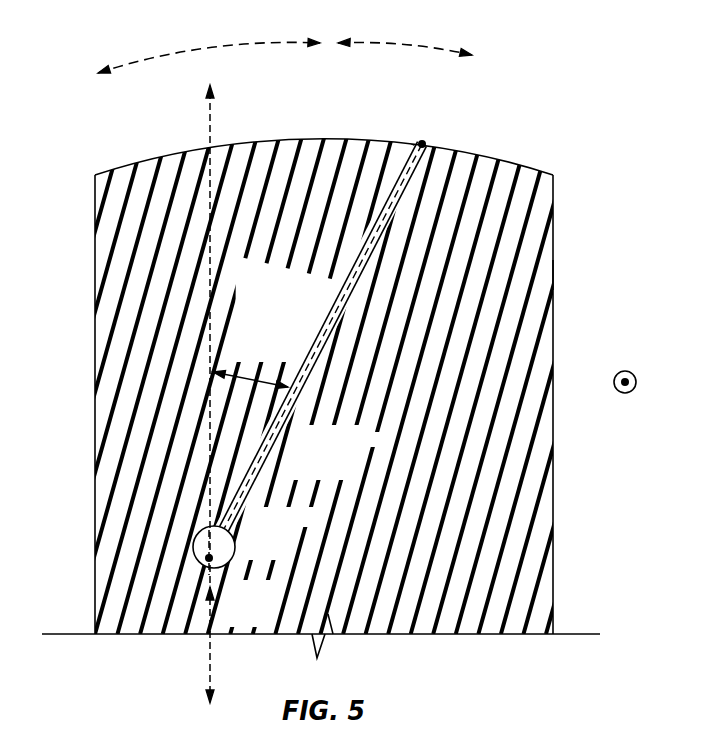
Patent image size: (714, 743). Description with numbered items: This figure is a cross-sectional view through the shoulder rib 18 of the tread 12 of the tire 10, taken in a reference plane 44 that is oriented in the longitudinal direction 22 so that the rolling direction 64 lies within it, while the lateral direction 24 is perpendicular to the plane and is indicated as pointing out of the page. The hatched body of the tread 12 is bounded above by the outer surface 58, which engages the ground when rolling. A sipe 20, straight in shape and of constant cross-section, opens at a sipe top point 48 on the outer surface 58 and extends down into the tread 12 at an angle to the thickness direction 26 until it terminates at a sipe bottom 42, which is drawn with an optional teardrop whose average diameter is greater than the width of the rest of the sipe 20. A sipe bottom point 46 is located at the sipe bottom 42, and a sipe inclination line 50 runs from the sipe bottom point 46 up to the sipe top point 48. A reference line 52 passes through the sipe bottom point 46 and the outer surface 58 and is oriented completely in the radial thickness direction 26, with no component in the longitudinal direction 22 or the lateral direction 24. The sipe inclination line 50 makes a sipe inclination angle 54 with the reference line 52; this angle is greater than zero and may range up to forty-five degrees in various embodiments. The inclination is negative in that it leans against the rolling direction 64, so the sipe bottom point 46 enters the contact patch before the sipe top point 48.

The tire 10 is at (498, 180).
The tread 12 is at (545, 242).
The shoulder rib 18 is at (545, 267).
The sipe 20 is at (330, 312).
The longitudinal direction 22 is at (398, 46).
The lateral direction 24 is at (627, 370).
The thickness direction 26 is at (208, 648).
The sipe bottom 42 is at (223, 562).
The reference plane 44 is at (105, 543).
The sipe bottom point 46 is at (233, 548).
The sipe top point 48 is at (422, 143).
The sipe inclination line 50 is at (280, 427).
The reference line 52 is at (208, 128).
The sipe inclination angle 54 is at (240, 373).
The outer surface 58 is at (300, 134).
The rolling direction 64 is at (203, 50).